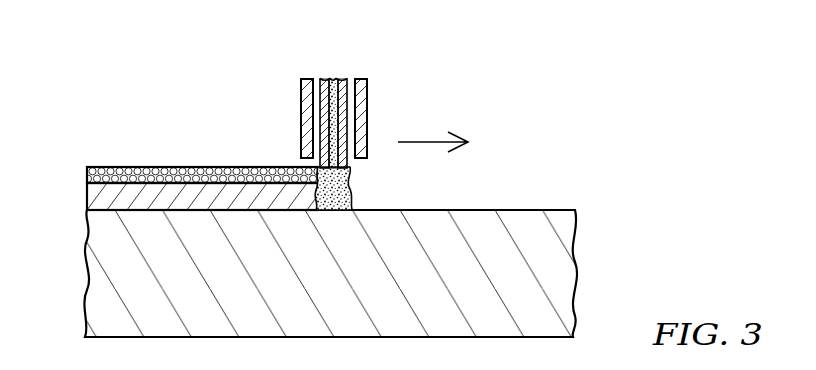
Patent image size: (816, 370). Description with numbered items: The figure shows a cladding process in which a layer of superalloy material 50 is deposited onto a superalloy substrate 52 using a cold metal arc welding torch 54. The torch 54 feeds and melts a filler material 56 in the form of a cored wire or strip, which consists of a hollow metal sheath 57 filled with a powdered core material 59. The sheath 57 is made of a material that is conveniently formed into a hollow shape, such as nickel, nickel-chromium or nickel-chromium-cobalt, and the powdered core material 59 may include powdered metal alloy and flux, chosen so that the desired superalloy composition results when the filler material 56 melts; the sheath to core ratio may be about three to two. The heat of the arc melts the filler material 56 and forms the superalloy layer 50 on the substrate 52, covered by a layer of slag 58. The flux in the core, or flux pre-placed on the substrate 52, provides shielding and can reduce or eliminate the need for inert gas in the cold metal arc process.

The layer of superalloy material 50 is at (97, 197).
The superalloy substrate 52 is at (97, 265).
The cold metal arc welding torch 54 is at (322, 96).
The filler material 56 is at (333, 77).
The hollow metal sheath 57 is at (343, 90).
The layer of slag 58 is at (102, 176).
The powdered core material 59 is at (333, 122).